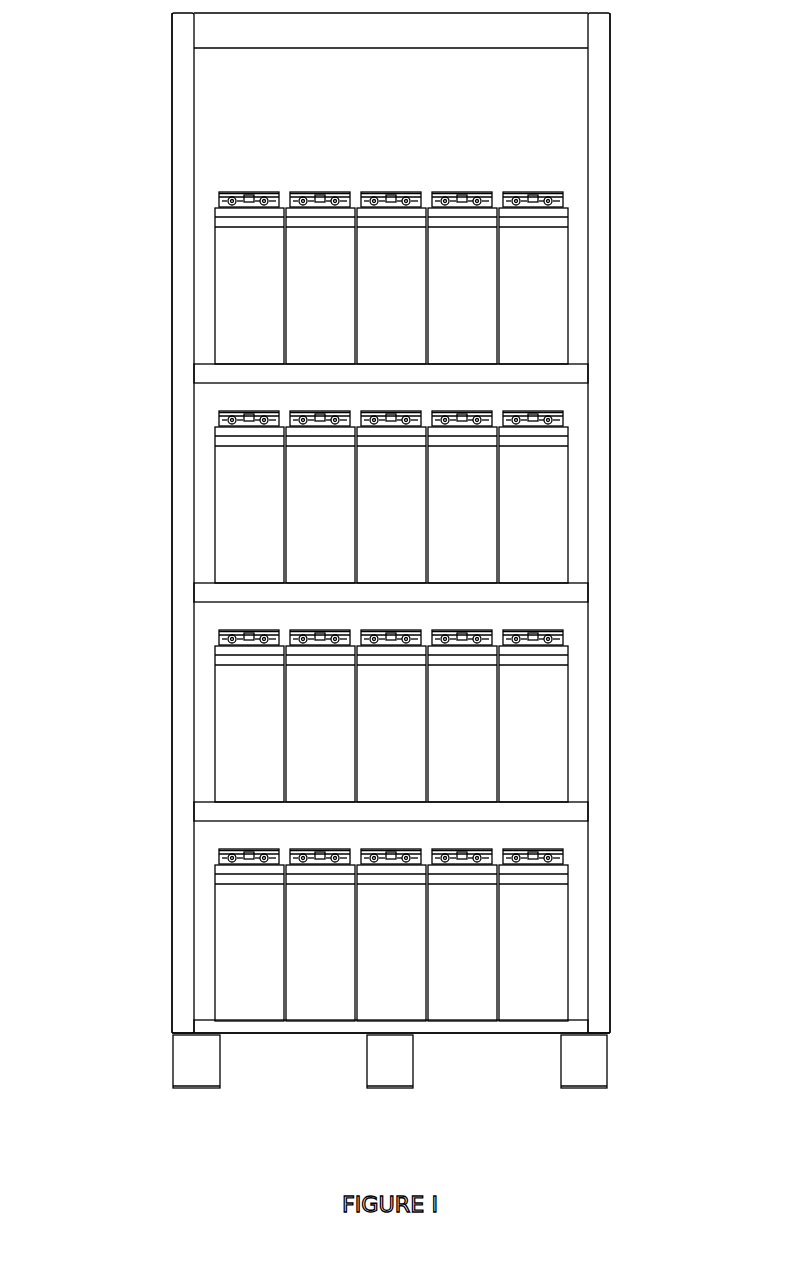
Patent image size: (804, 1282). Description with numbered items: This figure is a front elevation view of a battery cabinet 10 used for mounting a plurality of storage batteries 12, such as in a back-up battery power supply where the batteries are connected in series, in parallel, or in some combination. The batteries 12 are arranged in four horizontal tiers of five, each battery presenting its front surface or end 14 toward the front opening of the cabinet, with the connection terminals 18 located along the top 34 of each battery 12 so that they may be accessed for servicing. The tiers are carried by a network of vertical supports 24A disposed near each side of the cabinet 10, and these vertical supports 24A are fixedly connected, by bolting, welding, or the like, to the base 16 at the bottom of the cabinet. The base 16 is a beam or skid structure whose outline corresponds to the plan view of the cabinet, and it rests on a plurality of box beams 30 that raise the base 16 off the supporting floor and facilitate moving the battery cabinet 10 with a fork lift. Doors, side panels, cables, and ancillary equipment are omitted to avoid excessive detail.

The battery cabinet 10 is at (612, 203).
The storage battery 12 is at (404, 225).
The front surface or end of battery 14 is at (638, 232).
The base 16 is at (504, 1029).
The connection terminal 18 is at (564, 190).
The vertical support 24A is at (176, 511).
The box beam 30 is at (192, 1066).
The top of battery 34 is at (242, 190).